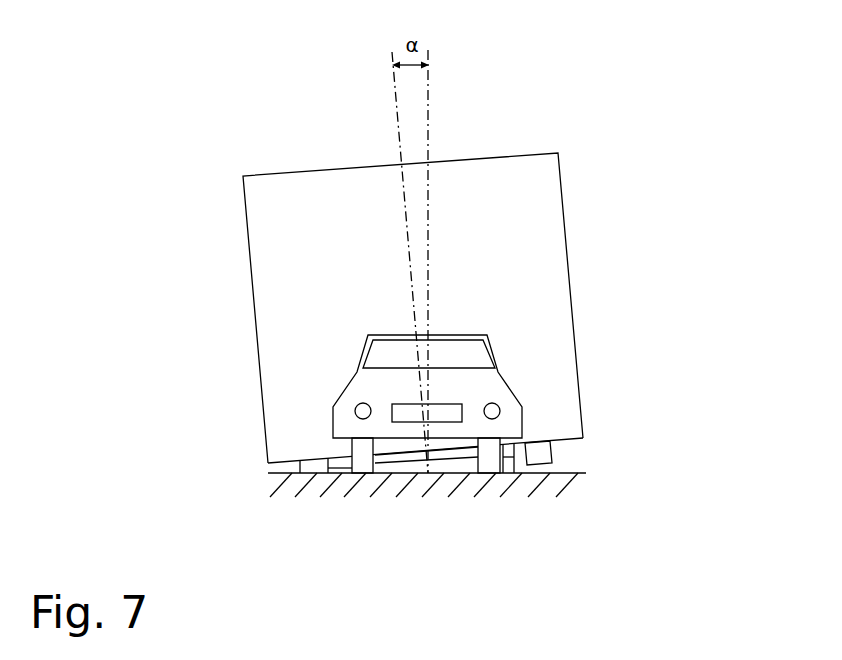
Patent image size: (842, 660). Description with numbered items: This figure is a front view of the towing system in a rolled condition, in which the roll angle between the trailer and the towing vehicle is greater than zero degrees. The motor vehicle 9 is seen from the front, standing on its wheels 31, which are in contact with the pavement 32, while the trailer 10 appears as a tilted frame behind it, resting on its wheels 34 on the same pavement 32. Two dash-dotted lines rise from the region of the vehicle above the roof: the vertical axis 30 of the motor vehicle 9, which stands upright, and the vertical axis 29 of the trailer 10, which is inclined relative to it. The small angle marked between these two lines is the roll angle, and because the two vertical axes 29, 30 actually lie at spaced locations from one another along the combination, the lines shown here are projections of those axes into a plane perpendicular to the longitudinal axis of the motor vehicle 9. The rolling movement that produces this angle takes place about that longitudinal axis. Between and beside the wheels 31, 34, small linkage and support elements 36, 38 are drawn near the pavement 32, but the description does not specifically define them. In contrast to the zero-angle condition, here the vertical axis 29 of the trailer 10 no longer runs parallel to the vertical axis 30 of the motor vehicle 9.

The motor vehicle 9 is at (370, 388).
The trailer 10 is at (522, 223).
The vertical axis of the trailer 29 is at (397, 118).
The vertical axis of the motor vehicle 30 is at (430, 127).
The wheels of the motor vehicle 31 is at (358, 455).
The pavement 32 is at (572, 478).
The wheels of the trailer 34 is at (538, 453).
The linkage between wheel supports 36 is at (413, 458).
The right wheel support 38 is at (514, 473).